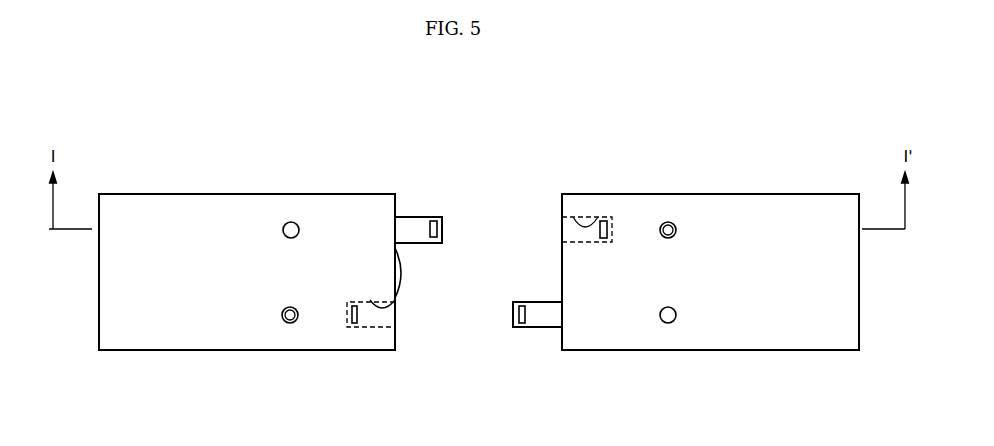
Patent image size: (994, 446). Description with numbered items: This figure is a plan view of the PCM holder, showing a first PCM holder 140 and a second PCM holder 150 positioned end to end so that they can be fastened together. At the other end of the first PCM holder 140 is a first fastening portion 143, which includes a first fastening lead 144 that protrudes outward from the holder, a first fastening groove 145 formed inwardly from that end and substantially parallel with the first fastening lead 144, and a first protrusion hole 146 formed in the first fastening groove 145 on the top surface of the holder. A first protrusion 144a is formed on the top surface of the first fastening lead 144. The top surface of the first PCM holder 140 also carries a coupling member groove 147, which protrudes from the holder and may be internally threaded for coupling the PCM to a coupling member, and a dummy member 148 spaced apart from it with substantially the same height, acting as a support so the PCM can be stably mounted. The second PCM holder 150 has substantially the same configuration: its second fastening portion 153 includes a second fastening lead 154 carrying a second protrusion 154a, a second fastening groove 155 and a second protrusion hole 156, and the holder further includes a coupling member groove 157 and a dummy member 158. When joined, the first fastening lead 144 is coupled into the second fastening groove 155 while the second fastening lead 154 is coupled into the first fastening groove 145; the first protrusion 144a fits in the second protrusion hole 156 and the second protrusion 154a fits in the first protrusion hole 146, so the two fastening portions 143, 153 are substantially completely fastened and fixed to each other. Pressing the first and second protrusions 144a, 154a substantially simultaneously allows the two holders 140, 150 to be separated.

The first PCM holder 140 is at (766, 205).
The first fastening portion 143 is at (665, 133).
The first fastening lead 144 is at (541, 308).
The first protrusion 144a is at (521, 303).
The first fastening groove 145 is at (598, 217).
The first protrusion hole 146 is at (608, 229).
The coupling member groove 147 is at (676, 230).
The dummy member 148 is at (670, 323).
The second PCM holder 150 is at (203, 206).
The second fastening portion 153 is at (307, 133).
The second fastening lead 154 is at (407, 222).
The second protrusion 154a is at (433, 221).
The second fastening groove 155 is at (393, 245).
The second protrusion hole 156 is at (355, 303).
The coupling member groove 157 is at (290, 323).
The dummy member 158 is at (283, 230).